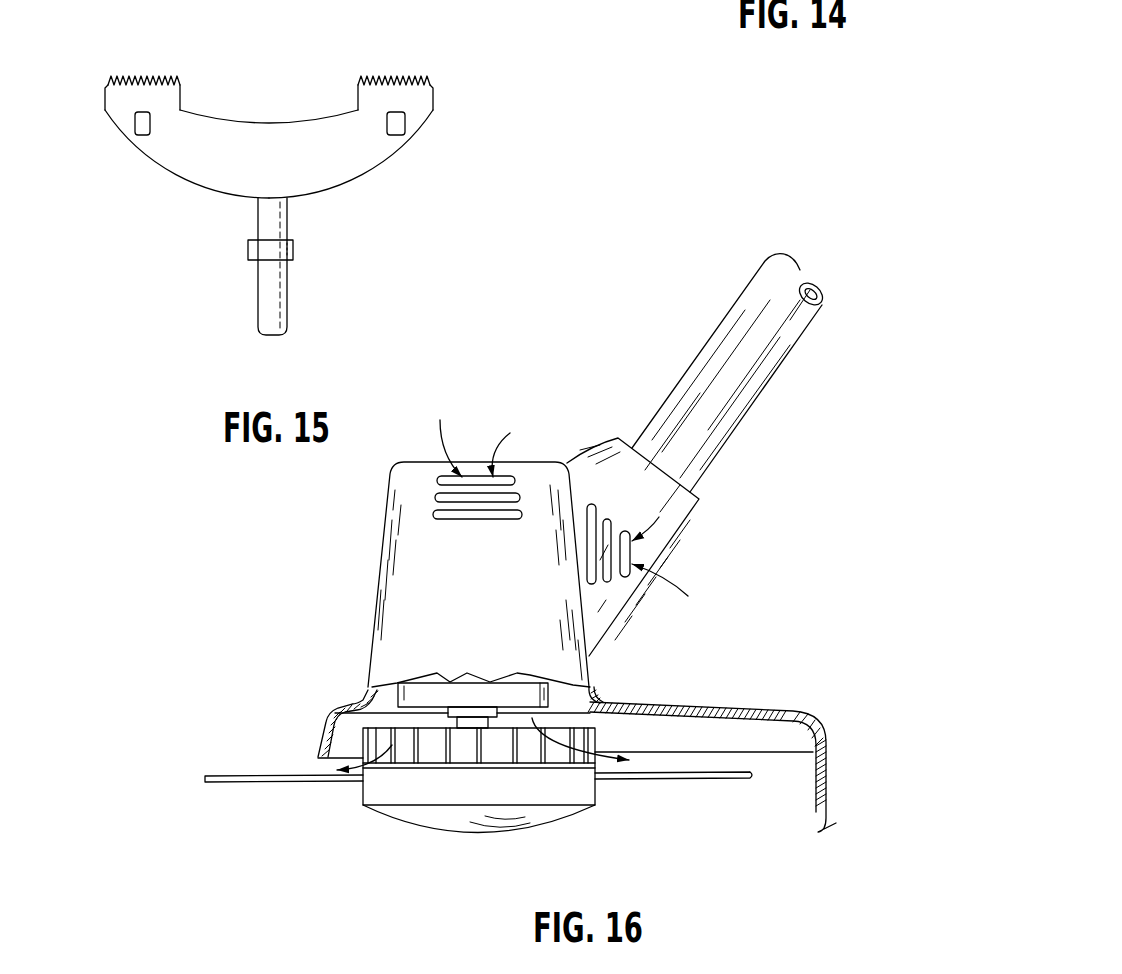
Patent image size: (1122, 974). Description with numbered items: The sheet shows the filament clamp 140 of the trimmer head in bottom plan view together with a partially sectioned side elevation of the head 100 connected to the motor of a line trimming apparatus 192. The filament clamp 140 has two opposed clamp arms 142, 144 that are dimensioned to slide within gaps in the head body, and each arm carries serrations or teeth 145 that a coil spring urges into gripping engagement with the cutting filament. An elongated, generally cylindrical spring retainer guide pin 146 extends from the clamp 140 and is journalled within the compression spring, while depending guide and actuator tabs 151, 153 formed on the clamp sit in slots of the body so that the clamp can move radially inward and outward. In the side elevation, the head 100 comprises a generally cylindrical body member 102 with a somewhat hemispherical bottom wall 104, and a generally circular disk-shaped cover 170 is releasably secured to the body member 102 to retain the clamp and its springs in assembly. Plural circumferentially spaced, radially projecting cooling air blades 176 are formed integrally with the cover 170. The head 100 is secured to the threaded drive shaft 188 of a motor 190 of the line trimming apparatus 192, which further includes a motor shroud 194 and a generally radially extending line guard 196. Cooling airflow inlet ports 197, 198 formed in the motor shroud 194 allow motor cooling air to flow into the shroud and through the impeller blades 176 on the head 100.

In FIG. 15, the filament clamp 140 is at (205, 198).
In FIG. 15, the clamp arm 142 is at (363, 172).
In FIG. 15, the clamp arm 144 is at (165, 173).
In FIG. 15, the serrations or teeth 145 is at (150, 74).
In FIG. 15, the spring retainer guide pin 146 is at (258, 287).
In FIG. 15, the guide and actuator tab 151 is at (396, 133).
In FIG. 15, the guide and actuator tab 153 is at (140, 134).
In FIG. 16, the head 100 is at (377, 820).
In FIG. 16, the body member 102 is at (595, 792).
In FIG. 16, the bottom wall 104 is at (515, 833).
In FIG. 16, the cover 170 is at (594, 719).
In FIG. 16, the cooling air blades 176 is at (420, 757).
In FIG. 16, the drive shaft 188 is at (468, 723).
In FIG. 16, the motor 190 is at (480, 688).
In FIG. 16, the line trimming apparatus 192 is at (553, 443).
In FIG. 16, the motor shroud 194 is at (377, 577).
In FIG. 16, the line guard 196 is at (830, 773).
In FIG. 16, the cooling airflow inlet port 197 is at (606, 521).
In FIG. 16, the cooling airflow inlet port 198 is at (465, 515).